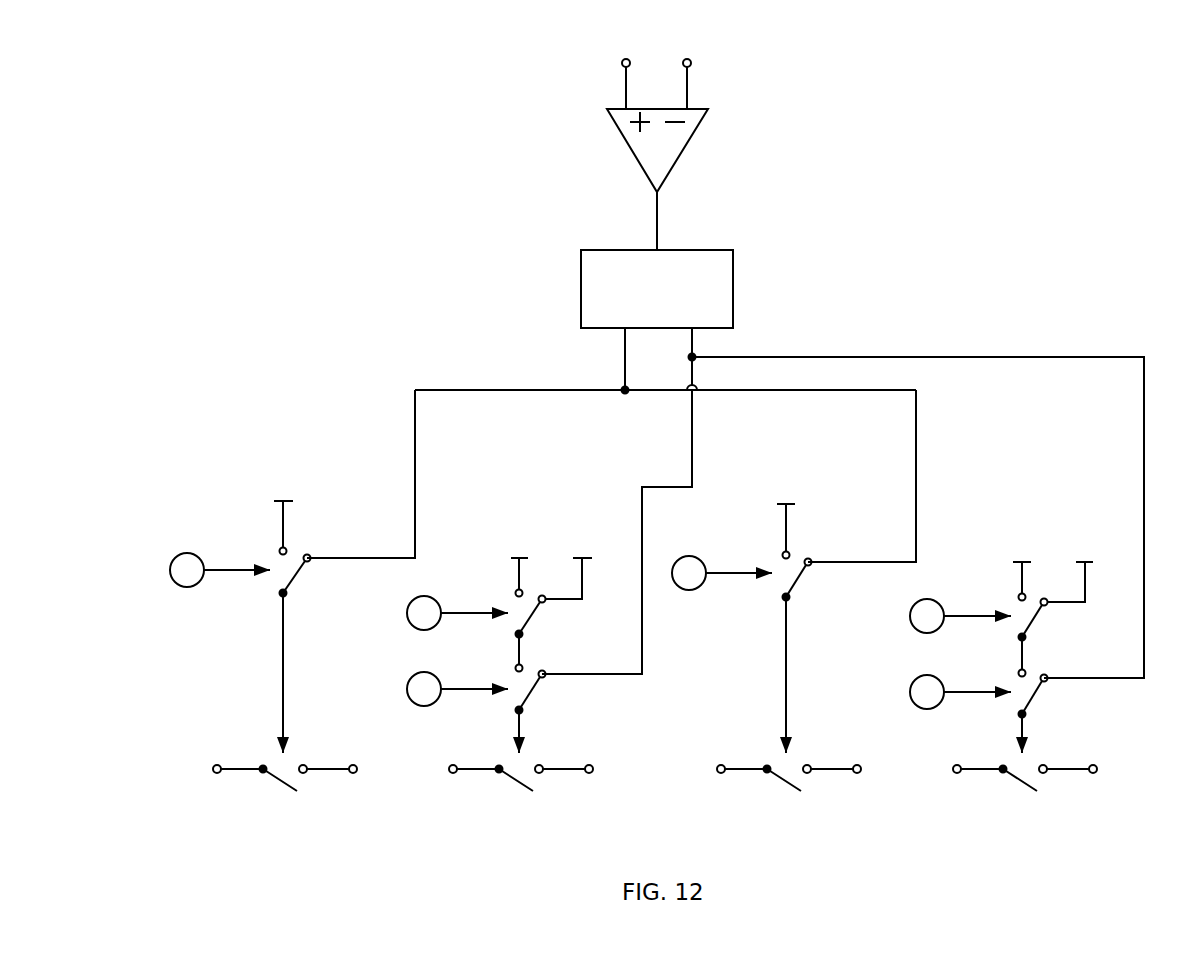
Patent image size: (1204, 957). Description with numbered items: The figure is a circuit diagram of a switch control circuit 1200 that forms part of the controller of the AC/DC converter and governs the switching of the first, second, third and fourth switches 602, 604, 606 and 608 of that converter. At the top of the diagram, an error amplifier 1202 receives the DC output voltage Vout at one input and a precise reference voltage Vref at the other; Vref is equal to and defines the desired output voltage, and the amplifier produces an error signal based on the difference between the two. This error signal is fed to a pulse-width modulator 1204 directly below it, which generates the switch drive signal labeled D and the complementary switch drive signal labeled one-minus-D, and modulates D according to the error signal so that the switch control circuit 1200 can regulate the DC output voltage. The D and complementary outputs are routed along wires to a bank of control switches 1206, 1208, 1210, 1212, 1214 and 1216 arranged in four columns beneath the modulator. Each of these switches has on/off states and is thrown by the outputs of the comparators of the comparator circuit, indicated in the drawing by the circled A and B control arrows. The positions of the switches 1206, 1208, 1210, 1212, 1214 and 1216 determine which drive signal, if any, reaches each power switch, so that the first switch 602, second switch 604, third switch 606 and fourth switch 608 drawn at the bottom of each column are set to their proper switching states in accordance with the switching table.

The switch control circuit 1200 is at (363, 303).
The error amplifier 1202 is at (686, 138).
The pulse-width modulator 1204 is at (693, 289).
The switch 1206 is at (264, 540).
The switch 1208 is at (502, 588).
The switch 1210 is at (500, 678).
The switch 1212 is at (765, 541).
The switch 1214 is at (1005, 590).
The switch 1216 is at (1002, 679).
The first switch 602 is at (285, 716).
The second switch 604 is at (521, 775).
The third switch 606 is at (789, 718).
The fourth switch 608 is at (1025, 777).